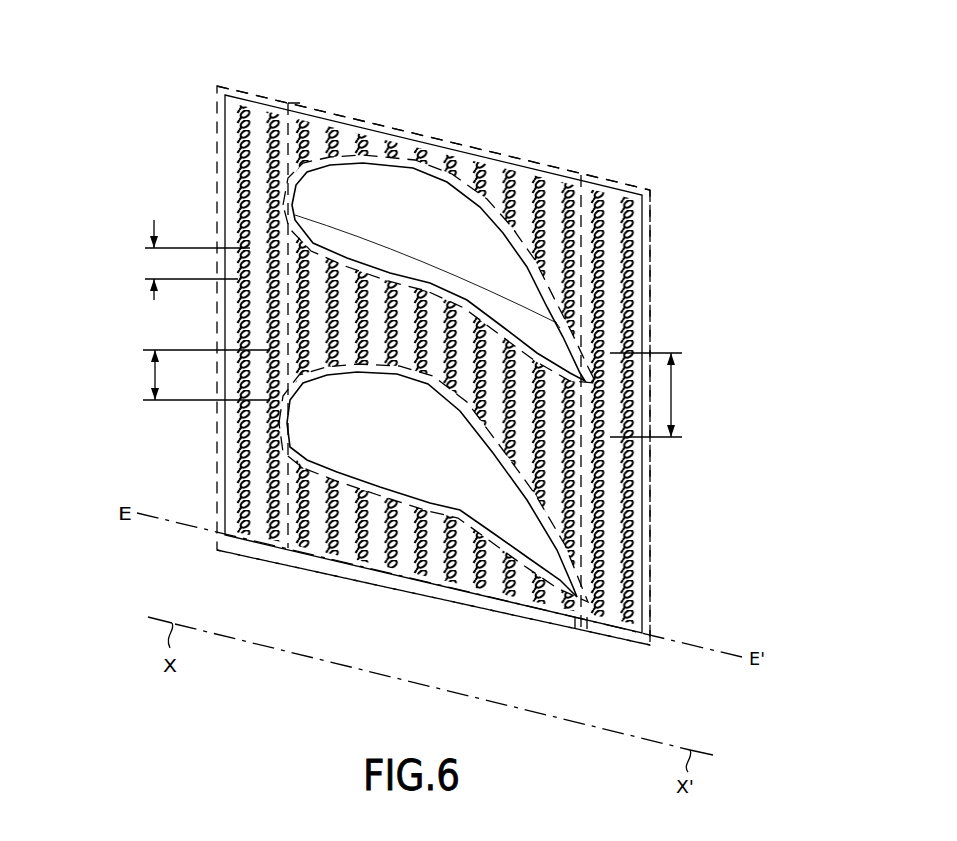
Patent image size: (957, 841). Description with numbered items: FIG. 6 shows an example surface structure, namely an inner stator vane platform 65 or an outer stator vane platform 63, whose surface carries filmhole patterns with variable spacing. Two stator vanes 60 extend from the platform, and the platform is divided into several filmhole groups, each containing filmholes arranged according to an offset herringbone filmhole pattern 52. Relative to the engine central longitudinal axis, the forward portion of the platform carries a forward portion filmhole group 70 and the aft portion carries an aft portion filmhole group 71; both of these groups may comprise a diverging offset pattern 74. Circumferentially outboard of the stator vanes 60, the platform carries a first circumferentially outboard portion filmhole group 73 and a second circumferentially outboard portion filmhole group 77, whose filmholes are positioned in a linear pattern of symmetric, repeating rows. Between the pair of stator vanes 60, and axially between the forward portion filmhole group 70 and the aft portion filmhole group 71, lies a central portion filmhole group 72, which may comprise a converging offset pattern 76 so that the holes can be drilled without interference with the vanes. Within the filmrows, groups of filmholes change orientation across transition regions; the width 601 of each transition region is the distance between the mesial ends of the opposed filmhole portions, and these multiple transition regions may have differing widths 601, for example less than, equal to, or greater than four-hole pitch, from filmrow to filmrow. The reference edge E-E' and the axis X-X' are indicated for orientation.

The forward portion filmhole group 70 is at (221, 86).
The first circumferentially outboard portion filmhole group 73 is at (341, 108).
The second circumferentially outboard portion filmhole group 77 is at (381, 595).
The aft portion filmhole group 71 is at (632, 644).
The diverging offset pattern 74 is at (283, 98).
The offset herringbone filmhole pattern 52 is at (440, 256).
The converging offset pattern 76 is at (439, 269).
The central portion filmhole group 72 is at (340, 393).
The stator vane 60 is at (293, 190).
The width of the transition region 601 is at (157, 265).
The outer stator vane platform 63 is at (505, 103).
The inner stator vane platform 65 is at (433, 138).